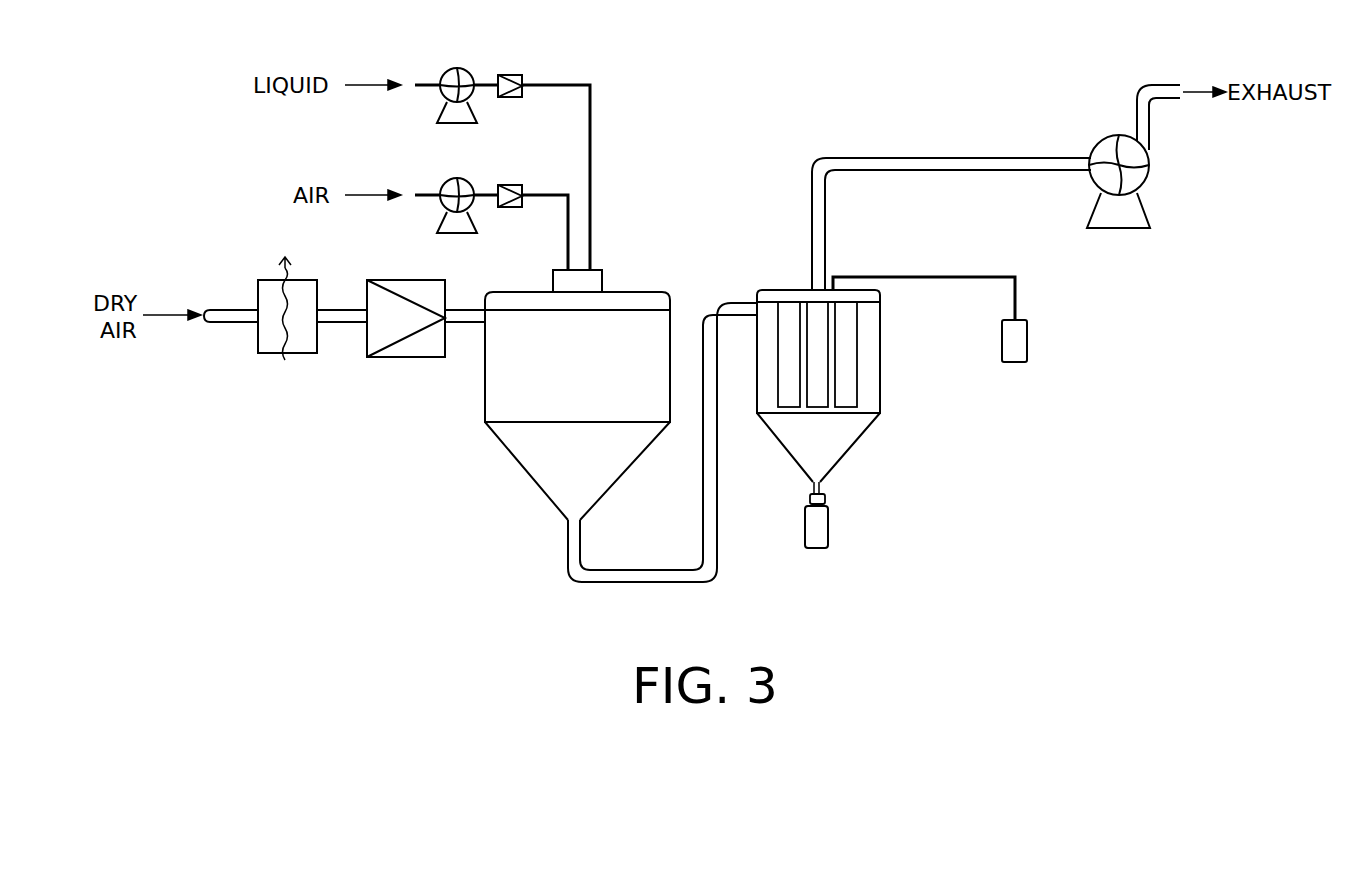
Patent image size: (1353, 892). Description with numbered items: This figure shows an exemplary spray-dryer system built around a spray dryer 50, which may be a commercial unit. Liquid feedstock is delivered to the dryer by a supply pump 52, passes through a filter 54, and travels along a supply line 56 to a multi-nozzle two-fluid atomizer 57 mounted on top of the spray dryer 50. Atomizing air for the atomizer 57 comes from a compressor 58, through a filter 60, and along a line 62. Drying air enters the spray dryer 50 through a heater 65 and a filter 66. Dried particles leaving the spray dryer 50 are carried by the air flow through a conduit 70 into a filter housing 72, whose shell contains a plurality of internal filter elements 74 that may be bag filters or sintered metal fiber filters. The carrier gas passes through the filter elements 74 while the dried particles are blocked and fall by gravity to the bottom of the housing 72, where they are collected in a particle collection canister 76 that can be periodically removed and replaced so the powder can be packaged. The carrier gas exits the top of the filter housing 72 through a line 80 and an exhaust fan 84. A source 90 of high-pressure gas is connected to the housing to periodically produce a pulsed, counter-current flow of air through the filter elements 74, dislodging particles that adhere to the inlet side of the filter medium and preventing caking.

The spray dryer 50 is at (493, 400).
The supply pump 52 is at (452, 70).
The filter 54 is at (511, 74).
The supply line 56 is at (590, 135).
The multi-nozzle two-fluid atomizer 57 is at (601, 268).
The compressor 58 is at (452, 180).
The filter 60 is at (511, 184).
The line 62 is at (567, 243).
The heater 65 is at (273, 355).
The filter 66 is at (393, 357).
The conduit 70 is at (717, 498).
The filter housing 72 is at (882, 385).
The filter elements 74 is at (850, 353).
The particle collection canister 76 is at (830, 525).
The line 80 is at (812, 192).
The exhaust fan 84 is at (1148, 170).
The source of high-pressure gas 90 is at (1028, 335).